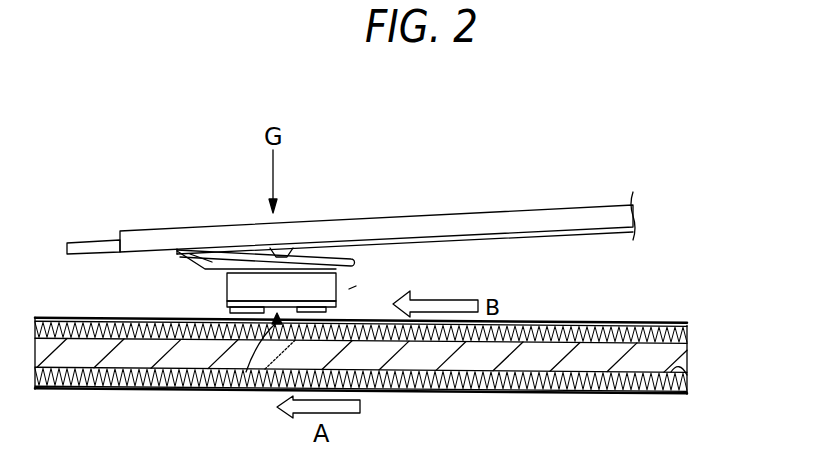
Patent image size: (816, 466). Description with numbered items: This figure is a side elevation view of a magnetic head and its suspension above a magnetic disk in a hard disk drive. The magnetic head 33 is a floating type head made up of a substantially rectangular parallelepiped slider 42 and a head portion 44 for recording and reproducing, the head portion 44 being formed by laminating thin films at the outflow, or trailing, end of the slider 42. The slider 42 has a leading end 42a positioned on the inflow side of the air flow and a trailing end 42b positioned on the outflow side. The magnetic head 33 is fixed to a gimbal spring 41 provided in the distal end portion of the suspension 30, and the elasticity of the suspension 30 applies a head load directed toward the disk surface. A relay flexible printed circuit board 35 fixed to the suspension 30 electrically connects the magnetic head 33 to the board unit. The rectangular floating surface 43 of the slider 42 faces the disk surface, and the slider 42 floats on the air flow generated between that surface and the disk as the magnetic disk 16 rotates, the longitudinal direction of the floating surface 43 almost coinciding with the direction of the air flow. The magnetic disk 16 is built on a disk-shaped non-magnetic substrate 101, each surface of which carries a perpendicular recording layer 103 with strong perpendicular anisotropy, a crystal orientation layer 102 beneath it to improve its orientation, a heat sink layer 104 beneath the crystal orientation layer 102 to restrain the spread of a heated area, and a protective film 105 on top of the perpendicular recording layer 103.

The magnetic disk 16 is at (655, 304).
The suspension 30 is at (517, 213).
The magnetic head 33 is at (356, 286).
The relay flexible printed circuit board 35 is at (547, 237).
The gimbal spring 41 is at (338, 262).
The slider 42 is at (257, 280).
The leading end 42a is at (338, 276).
The trailing end 42b is at (228, 302).
The floating surface 43 is at (240, 388).
The head portion 44 is at (232, 285).
The substrate 101 is at (530, 368).
The crystal orientation layer 102 is at (578, 322).
The perpendicular recording layer 103 is at (627, 321).
The heat sink layer 104 is at (687, 347).
The protective film 105 is at (677, 321).